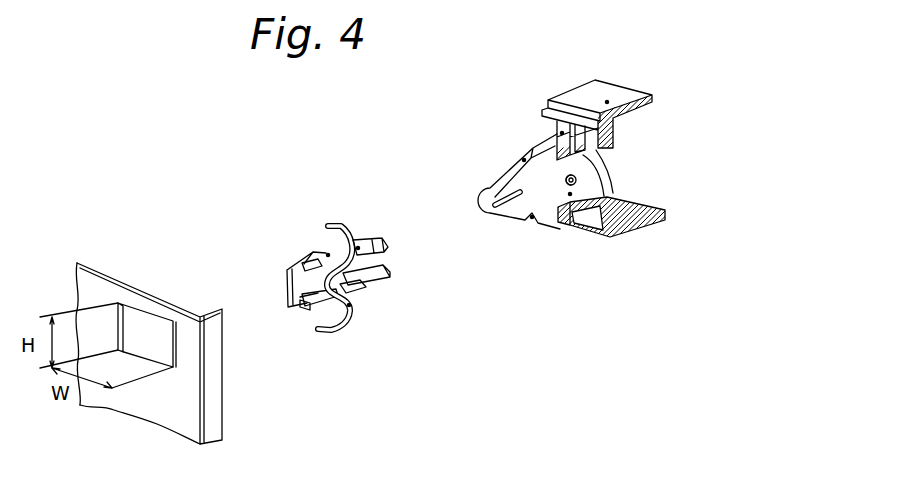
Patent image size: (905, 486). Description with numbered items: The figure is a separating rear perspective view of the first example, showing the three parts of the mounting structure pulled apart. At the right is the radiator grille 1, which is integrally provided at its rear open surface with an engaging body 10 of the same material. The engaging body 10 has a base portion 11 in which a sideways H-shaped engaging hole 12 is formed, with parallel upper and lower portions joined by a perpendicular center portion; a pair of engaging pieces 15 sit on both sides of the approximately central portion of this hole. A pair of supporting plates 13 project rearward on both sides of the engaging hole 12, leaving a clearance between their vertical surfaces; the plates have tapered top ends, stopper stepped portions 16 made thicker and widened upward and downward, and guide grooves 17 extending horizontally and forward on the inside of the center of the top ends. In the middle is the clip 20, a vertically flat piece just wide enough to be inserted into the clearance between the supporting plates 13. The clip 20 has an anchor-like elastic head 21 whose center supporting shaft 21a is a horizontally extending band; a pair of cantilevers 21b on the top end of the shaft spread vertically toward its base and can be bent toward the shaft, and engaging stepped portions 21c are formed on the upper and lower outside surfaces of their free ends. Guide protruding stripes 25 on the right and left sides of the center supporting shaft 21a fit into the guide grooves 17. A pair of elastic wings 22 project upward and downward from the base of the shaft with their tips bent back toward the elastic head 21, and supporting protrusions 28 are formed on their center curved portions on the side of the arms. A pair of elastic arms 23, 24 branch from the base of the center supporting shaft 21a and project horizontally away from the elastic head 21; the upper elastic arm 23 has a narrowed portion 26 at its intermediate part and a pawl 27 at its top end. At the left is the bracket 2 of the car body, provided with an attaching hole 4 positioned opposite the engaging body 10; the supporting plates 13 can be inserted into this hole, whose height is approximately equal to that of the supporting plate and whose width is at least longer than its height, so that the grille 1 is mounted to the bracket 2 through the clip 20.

The radiator grille 1 is at (607, 102).
The bracket 2 is at (163, 285).
The attaching hole 4 is at (145, 347).
The engaging body 10 is at (620, 166).
The base portion 11 is at (562, 133).
The engaging hole 12 is at (600, 178).
The supporting plates 13 is at (503, 183).
The engaging pieces 15 is at (576, 180).
The stopper stepped portions 16 is at (524, 160).
The guide grooves 17 is at (491, 185).
The clip 20 is at (348, 281).
The elastic head 21 is at (288, 292).
The center supporting shaft 21a is at (315, 305).
The cantilevers 21b is at (298, 266).
The engaging stepped portions 21c is at (328, 255).
The elastic wings 22 is at (353, 225).
The upper elastic arm 23 is at (406, 243).
The lower elastic arm 24 is at (367, 285).
The guide protruding stripes 25 is at (308, 305).
The narrowed portion 26 is at (374, 264).
The pawl 27 is at (378, 244).
The supporting protrusions 28 is at (358, 248).